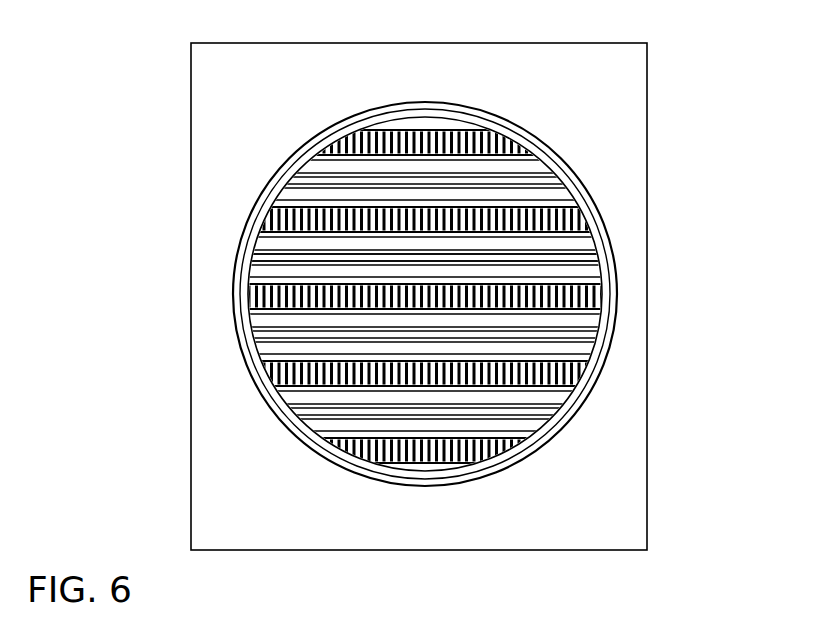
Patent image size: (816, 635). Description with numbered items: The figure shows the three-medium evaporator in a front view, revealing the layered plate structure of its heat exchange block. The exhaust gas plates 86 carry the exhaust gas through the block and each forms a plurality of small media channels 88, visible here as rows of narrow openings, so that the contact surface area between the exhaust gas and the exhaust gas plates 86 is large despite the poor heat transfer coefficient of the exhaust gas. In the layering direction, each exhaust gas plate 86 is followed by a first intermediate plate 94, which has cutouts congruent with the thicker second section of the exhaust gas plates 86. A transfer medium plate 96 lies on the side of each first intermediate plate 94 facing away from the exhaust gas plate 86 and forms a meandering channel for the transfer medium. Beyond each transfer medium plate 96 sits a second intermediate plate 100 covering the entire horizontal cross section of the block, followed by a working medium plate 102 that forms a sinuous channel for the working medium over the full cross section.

The exhaust gas plates 86 is at (581, 219).
The media channels 88 is at (262, 221).
The first intermediate plate 94 is at (572, 233).
The transfer medium plate 96 is at (572, 271).
The second intermediate plate 100 is at (252, 251).
The working medium plate 102 is at (265, 257).